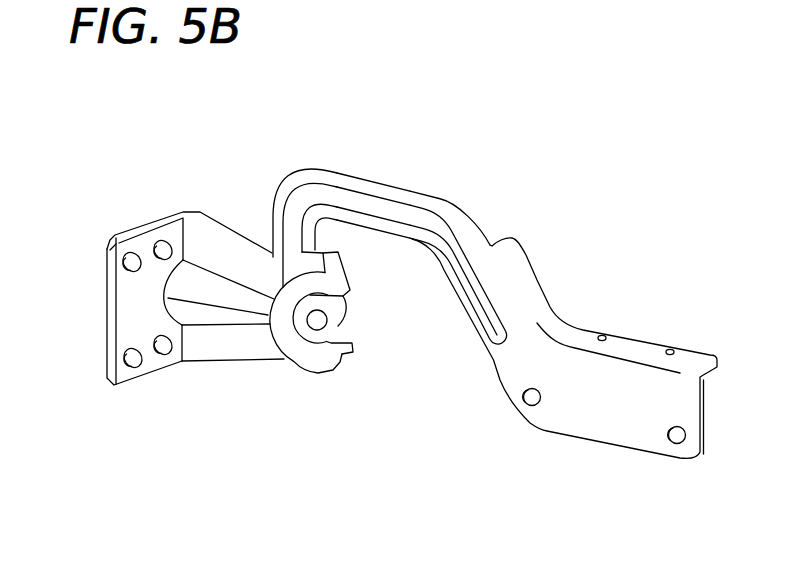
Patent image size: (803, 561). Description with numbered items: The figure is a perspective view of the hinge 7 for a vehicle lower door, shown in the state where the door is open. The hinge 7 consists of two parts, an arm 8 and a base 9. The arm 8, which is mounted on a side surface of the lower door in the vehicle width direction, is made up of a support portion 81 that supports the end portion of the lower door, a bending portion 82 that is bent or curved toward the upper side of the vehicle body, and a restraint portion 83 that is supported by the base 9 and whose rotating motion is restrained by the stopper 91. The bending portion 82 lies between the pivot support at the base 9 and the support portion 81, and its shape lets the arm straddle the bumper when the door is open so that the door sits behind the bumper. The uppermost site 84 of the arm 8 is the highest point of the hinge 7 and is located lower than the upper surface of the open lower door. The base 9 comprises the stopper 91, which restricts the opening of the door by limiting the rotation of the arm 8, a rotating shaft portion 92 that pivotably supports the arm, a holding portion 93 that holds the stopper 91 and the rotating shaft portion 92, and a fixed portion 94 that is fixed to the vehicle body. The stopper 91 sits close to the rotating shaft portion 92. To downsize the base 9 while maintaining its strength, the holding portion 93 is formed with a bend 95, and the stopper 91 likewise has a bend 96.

The hinge 7 is at (284, 138).
The arm 8 is at (390, 183).
The base 9 is at (200, 210).
The support portion 81 is at (607, 430).
The bending portion 82 is at (443, 215).
The restraint portion 83 is at (273, 222).
The uppermost site 84 is at (408, 193).
The stopper 91 is at (347, 278).
The rotating shaft portion 92 is at (318, 322).
The holding portion 93 is at (243, 348).
The fixed portion 94 is at (128, 310).
The bend 95 is at (200, 317).
The bend 96 is at (332, 264).